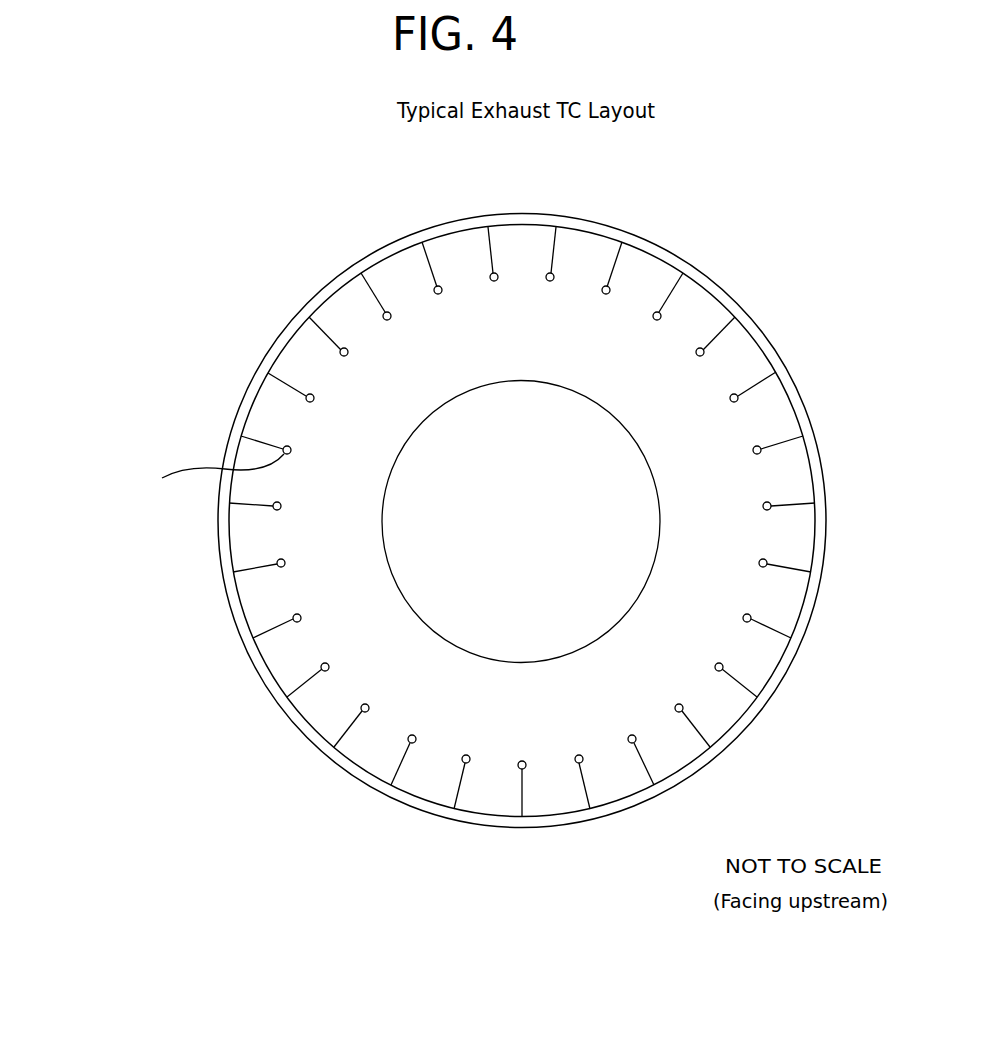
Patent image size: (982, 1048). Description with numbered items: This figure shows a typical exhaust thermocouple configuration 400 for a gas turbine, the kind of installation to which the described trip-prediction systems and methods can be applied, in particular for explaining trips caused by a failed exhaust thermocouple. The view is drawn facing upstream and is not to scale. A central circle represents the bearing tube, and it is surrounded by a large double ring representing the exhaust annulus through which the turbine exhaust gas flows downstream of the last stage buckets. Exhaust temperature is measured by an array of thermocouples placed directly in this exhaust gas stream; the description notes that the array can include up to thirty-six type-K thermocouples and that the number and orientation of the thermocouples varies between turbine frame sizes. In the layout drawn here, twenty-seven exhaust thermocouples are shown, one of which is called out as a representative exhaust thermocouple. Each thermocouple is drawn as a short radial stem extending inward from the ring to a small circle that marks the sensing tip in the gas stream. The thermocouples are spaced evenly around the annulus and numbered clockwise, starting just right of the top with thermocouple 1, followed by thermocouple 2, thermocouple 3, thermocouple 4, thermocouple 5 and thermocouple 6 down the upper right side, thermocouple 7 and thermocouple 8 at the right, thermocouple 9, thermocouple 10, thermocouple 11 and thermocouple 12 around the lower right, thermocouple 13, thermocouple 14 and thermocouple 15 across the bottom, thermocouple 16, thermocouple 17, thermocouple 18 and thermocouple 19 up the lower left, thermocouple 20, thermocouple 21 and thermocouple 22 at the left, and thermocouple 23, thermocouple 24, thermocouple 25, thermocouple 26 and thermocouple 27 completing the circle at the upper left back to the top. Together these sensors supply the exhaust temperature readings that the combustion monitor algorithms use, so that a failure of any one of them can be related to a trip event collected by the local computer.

The exhaust thermocouple configuration 400 is at (298, 206).
The exhaust thermocouple 1 is at (553, 232).
The exhaust thermocouple 2 is at (615, 247).
The exhaust thermocouple 3 is at (674, 275).
The exhaust thermocouple 4 is at (727, 320).
The exhaust thermocouple 5 is at (770, 372).
The exhaust thermocouple 6 is at (794, 433).
The exhaust thermocouple 7 is at (805, 500).
The exhaust thermocouple 8 is at (803, 572).
The exhaust thermocouple 9 is at (784, 636).
The exhaust thermocouple 10 is at (757, 694).
The exhaust thermocouple 11 is at (709, 744).
The exhaust thermocouple 12 is at (654, 782).
The exhaust thermocouple 13 is at (595, 803).
The exhaust thermocouple 14 is at (522, 811).
The exhaust thermocouple 15 is at (451, 805).
The exhaust thermocouple 16 is at (388, 784).
The exhaust thermocouple 17 is at (330, 747).
The exhaust thermocouple 18 is at (284, 697).
The exhaust thermocouple 19 is at (251, 641).
The exhaust thermocouple 20 is at (232, 575).
The exhaust thermocouple 21 is at (230, 500).
The exhaust thermocouple 22 is at (242, 435).
The exhaust thermocouple 23 is at (266, 372).
The exhaust thermocouple 24 is at (308, 320).
The exhaust thermocouple 25 is at (357, 275).
The exhaust thermocouple 26 is at (416, 247).
The exhaust thermocouple 27 is at (488, 230).